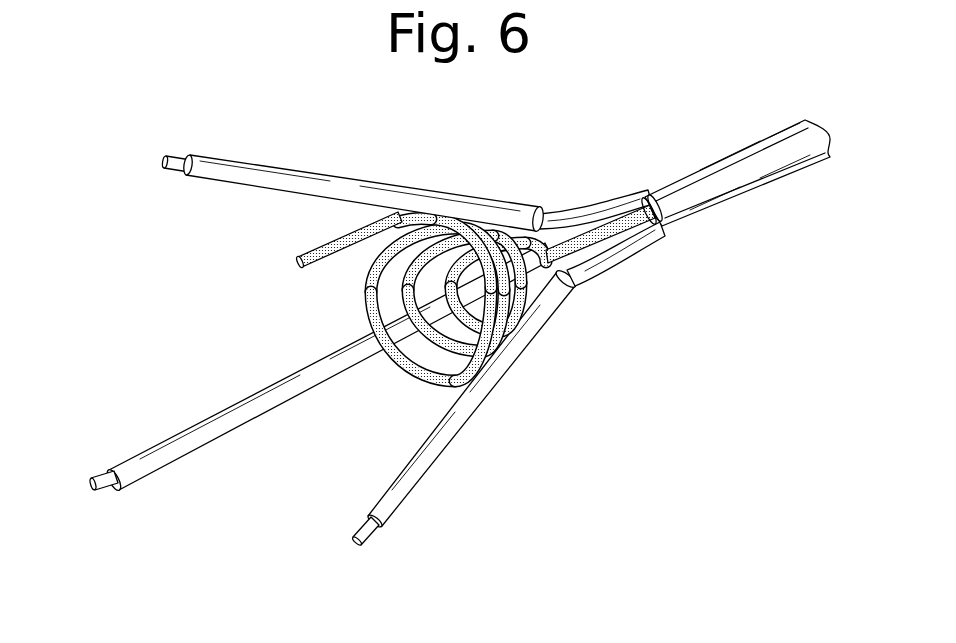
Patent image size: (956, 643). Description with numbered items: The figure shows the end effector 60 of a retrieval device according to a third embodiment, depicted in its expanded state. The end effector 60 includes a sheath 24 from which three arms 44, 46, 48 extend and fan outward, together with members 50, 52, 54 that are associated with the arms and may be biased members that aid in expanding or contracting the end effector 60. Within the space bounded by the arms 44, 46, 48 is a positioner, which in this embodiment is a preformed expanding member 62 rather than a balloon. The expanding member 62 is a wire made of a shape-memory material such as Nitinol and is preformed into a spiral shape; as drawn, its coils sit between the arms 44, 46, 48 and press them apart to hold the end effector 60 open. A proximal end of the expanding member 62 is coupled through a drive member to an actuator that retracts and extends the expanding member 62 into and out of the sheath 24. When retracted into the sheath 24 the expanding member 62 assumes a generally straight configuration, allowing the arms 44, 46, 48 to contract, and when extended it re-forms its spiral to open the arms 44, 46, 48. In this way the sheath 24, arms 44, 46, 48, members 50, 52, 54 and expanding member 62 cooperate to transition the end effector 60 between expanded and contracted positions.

The sheath 24 is at (732, 172).
The arm 44 is at (289, 178).
The arm 46 is at (224, 417).
The arm 48 is at (420, 466).
The member 50 is at (165, 165).
The member 52 is at (95, 489).
The member 54 is at (360, 544).
The end effector 60 is at (104, 129).
The expanding member 62 is at (369, 295).